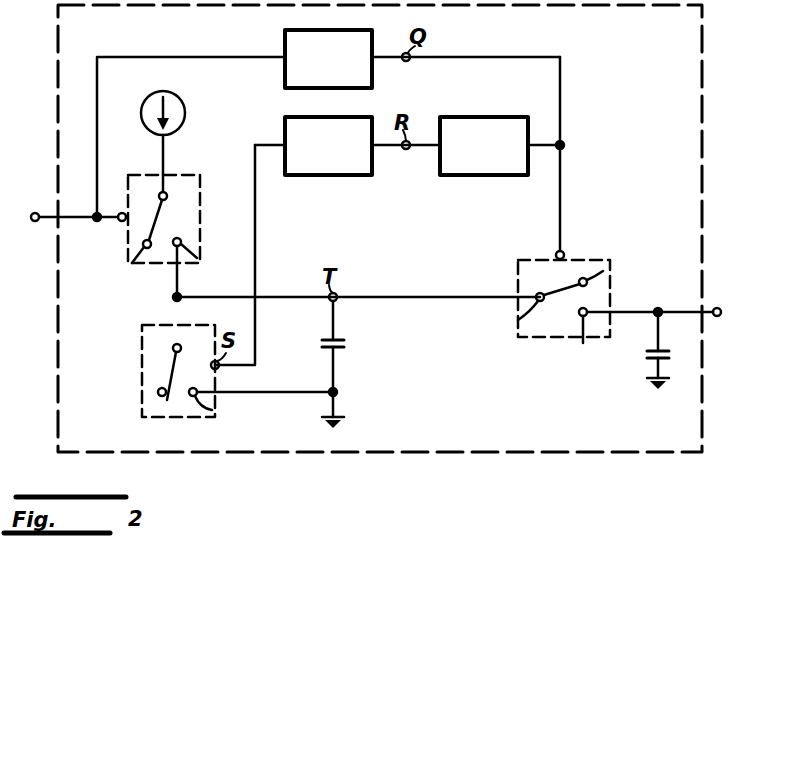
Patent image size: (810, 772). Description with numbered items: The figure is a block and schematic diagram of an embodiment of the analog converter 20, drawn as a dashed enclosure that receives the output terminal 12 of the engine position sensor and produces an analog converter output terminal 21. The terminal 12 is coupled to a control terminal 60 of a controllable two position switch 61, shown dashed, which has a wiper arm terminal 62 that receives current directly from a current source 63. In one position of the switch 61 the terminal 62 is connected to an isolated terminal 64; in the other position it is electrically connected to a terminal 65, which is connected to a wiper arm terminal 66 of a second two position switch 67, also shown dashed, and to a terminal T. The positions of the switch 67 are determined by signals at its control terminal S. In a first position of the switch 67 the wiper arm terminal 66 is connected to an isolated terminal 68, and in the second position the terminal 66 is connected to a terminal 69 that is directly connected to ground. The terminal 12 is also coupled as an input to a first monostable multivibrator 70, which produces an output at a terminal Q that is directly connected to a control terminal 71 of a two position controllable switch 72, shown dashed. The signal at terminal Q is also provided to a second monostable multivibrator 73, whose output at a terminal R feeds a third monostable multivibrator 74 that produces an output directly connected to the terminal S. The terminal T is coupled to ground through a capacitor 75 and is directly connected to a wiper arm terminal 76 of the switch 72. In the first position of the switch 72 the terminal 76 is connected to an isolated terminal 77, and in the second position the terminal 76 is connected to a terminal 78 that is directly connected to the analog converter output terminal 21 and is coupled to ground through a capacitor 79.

The output terminal 12 is at (38, 212).
The analog converter 20 is at (703, 105).
The analog converter output terminal 21 is at (722, 310).
The control terminal 60 is at (118, 222).
The controllable two position switch 61 is at (180, 176).
The wiper arm terminal 62 is at (167, 198).
The current source 63 is at (182, 100).
The isolated terminal 64 is at (129, 269).
The terminal 65 is at (205, 267).
The wiper arm terminal 66 is at (181, 345).
The two position switch 67 is at (142, 334).
The isolated terminal 68 is at (158, 392).
The terminal 69 is at (212, 410).
The first monostable multivibrator 70 is at (296, 44).
The control terminal 71 is at (566, 256).
The two position controllable switch 72 is at (518, 270).
The second monostable multivibrator 73 is at (500, 128).
The third monostable multivibrator 74 is at (298, 126).
The capacitor 75 is at (344, 346).
The wiper arm terminal 76 is at (526, 309).
The isolated terminal 77 is at (604, 272).
The terminal 78 is at (637, 340).
The capacitor 79 is at (647, 356).